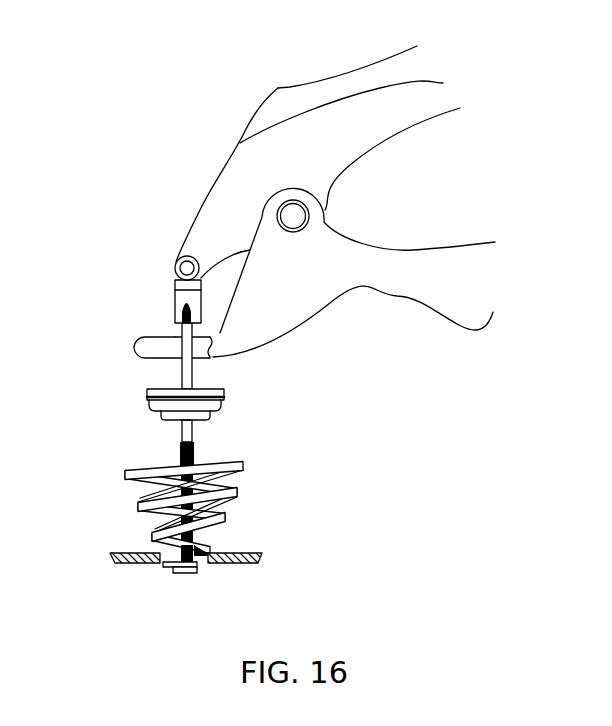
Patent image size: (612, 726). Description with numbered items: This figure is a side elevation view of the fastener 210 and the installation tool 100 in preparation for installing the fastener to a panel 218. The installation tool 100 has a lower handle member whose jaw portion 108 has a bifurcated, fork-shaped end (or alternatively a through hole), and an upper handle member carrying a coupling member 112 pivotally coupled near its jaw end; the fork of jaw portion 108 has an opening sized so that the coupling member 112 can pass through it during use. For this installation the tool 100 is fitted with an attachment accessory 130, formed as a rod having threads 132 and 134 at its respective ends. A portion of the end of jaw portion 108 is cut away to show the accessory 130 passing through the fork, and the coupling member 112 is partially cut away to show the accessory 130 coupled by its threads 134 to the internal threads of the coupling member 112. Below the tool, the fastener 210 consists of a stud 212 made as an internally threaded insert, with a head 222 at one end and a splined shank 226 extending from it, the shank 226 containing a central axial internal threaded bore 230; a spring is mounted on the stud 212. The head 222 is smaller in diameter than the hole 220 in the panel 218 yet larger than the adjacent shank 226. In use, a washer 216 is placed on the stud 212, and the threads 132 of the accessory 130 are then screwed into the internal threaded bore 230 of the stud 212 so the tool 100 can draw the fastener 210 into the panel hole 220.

The installation tool 100 is at (214, 124).
The jaw portion 108 is at (135, 348).
The coupling member 112 is at (177, 290).
The attachment accessory 130 is at (182, 373).
The threads 132 is at (182, 452).
The threads 134 is at (177, 328).
The fastener 210 is at (204, 492).
The washer 216 is at (232, 403).
The panel 218 is at (273, 561).
The hole 220 is at (210, 568).
The head 222 is at (176, 573).
The shank 226 is at (168, 528).
The internal threaded bore 230 is at (240, 502).
The stud 212 is at (160, 571).